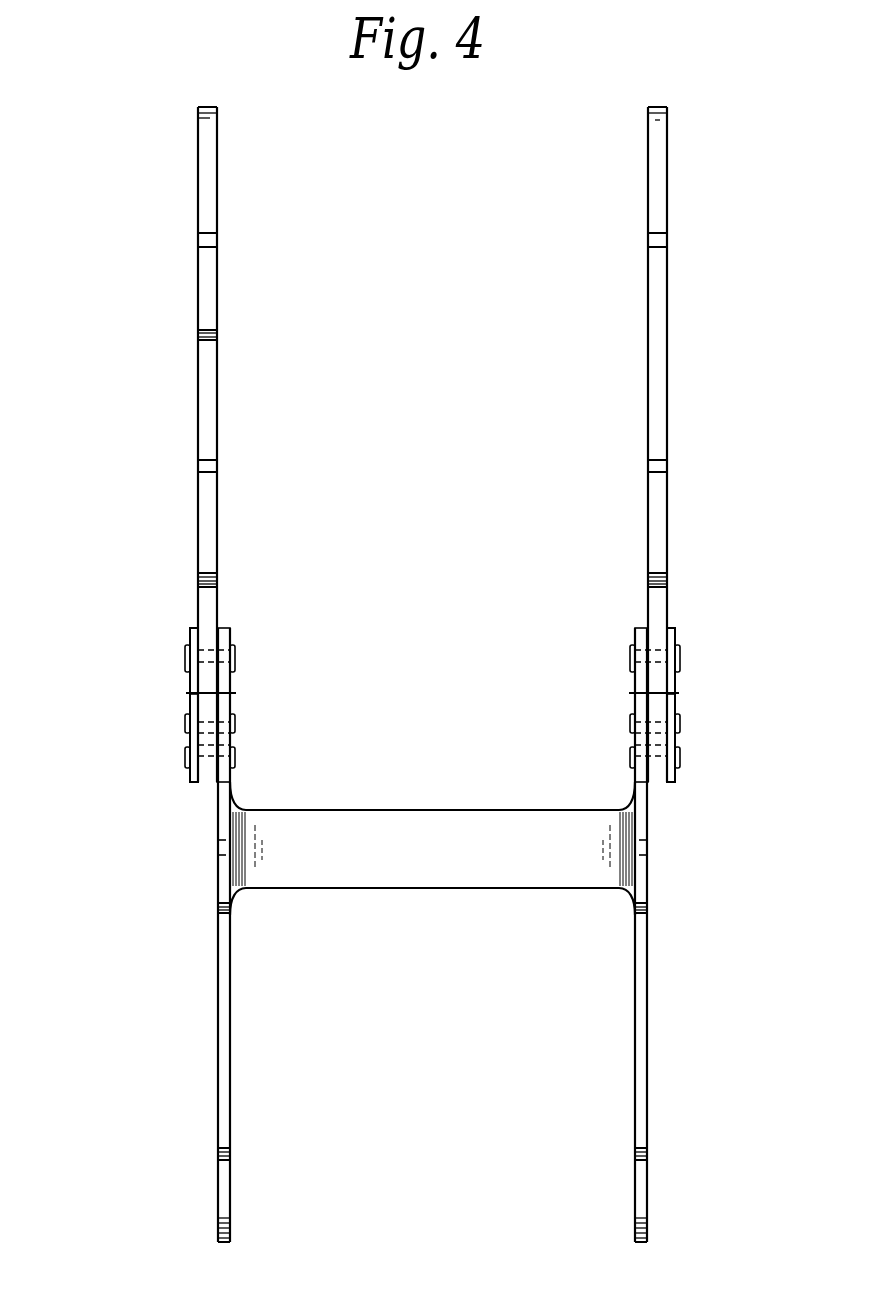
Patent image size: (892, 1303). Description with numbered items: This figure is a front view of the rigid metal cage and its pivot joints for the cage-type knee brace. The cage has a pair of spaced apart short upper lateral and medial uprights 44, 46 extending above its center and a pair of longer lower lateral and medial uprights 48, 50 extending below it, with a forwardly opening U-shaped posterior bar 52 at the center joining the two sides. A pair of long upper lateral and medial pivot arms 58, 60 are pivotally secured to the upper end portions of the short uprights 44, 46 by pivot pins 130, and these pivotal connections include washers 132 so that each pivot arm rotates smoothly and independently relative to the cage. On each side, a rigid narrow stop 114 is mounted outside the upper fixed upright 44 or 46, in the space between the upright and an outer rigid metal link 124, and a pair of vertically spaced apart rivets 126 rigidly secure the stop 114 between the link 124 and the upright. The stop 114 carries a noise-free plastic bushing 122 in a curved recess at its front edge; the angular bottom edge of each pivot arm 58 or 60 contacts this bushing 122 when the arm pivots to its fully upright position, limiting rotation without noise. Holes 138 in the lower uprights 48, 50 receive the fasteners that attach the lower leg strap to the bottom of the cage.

The upper lateral upright 44 is at (200, 696).
The upper medial upright 46 is at (640, 685).
The lower lateral upright 48 is at (232, 1043).
The lower medial upright 50 is at (650, 1040).
The U-shaped posterior bar 52 is at (430, 826).
The upper lateral pivot arm 58 is at (205, 298).
The upper medial pivot arm 60 is at (650, 351).
The stop 114 is at (210, 743).
The noise-free bushing 122 is at (197, 693).
The outer rigid metal link 124 is at (192, 703).
The rivets 126 is at (190, 768).
The pivot pins 130 is at (190, 657).
The washers 132 is at (217, 632).
The holes 138 is at (233, 1152).